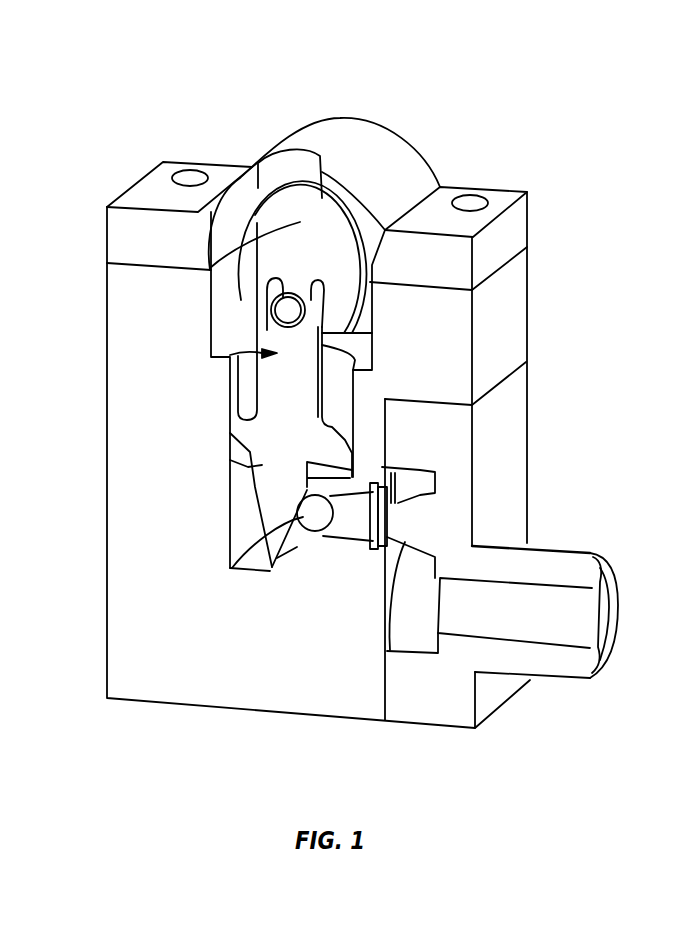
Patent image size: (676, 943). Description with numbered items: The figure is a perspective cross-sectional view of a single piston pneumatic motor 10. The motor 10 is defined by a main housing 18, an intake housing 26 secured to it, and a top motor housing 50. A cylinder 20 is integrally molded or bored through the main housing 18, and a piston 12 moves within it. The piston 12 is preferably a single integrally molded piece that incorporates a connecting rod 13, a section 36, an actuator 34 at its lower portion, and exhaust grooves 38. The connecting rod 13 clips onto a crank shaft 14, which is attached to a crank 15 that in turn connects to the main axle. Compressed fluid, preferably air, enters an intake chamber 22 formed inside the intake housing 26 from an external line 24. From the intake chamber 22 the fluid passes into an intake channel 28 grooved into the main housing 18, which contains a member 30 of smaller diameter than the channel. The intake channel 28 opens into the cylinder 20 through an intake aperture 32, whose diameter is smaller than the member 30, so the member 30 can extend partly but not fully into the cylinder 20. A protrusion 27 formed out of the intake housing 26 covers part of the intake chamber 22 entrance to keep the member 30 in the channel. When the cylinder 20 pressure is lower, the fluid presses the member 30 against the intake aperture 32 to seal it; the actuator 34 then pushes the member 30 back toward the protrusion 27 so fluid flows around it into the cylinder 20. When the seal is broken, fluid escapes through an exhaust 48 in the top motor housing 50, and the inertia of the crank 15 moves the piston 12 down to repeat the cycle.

The pneumatic motor 10 is at (529, 86).
The piston 12 is at (250, 348).
The connecting rod 13 is at (307, 382).
The crank shaft 14 is at (285, 306).
The crank 15 is at (300, 243).
The main housing 18 is at (122, 460).
The cylinder 20 is at (238, 405).
The intake chamber 22 is at (400, 648).
The external line 24 is at (590, 623).
The intake housing 26 is at (508, 425).
The protrusion 27 is at (420, 509).
The intake channel 28 is at (362, 523).
The member 30 is at (232, 568).
The intake aperture 32 is at (293, 552).
The actuator 34 is at (262, 468).
The section 36 is at (250, 433).
The exhaust grooves 38 is at (360, 443).
The exhaust 48 is at (277, 167).
The top motor housing 50 is at (508, 197).